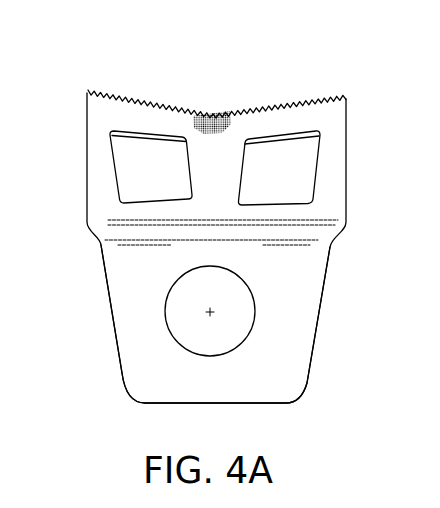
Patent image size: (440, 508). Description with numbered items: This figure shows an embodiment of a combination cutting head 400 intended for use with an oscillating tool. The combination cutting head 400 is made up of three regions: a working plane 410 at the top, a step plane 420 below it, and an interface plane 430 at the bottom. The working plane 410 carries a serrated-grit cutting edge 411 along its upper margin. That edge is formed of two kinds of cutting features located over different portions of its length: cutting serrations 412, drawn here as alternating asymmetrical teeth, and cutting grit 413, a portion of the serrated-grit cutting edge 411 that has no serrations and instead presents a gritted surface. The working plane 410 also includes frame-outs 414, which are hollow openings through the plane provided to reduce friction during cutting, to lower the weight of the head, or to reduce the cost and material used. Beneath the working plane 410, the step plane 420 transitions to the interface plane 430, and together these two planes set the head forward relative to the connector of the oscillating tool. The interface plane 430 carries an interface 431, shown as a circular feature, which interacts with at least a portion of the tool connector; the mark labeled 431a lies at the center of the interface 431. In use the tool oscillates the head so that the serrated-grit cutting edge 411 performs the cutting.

The combination cutting head 400 is at (79, 59).
The working plane 410 is at (110, 148).
The serrated-grit cutting edge 411 is at (347, 102).
The cutting serrations 412 is at (87, 93).
The cutting grit 413 is at (217, 114).
The frame-outs 414 is at (316, 177).
The step plane 420 is at (112, 213).
The interface plane 430 is at (122, 345).
The interface 431 is at (253, 328).
The center of circular opening 431a is at (180, 333).